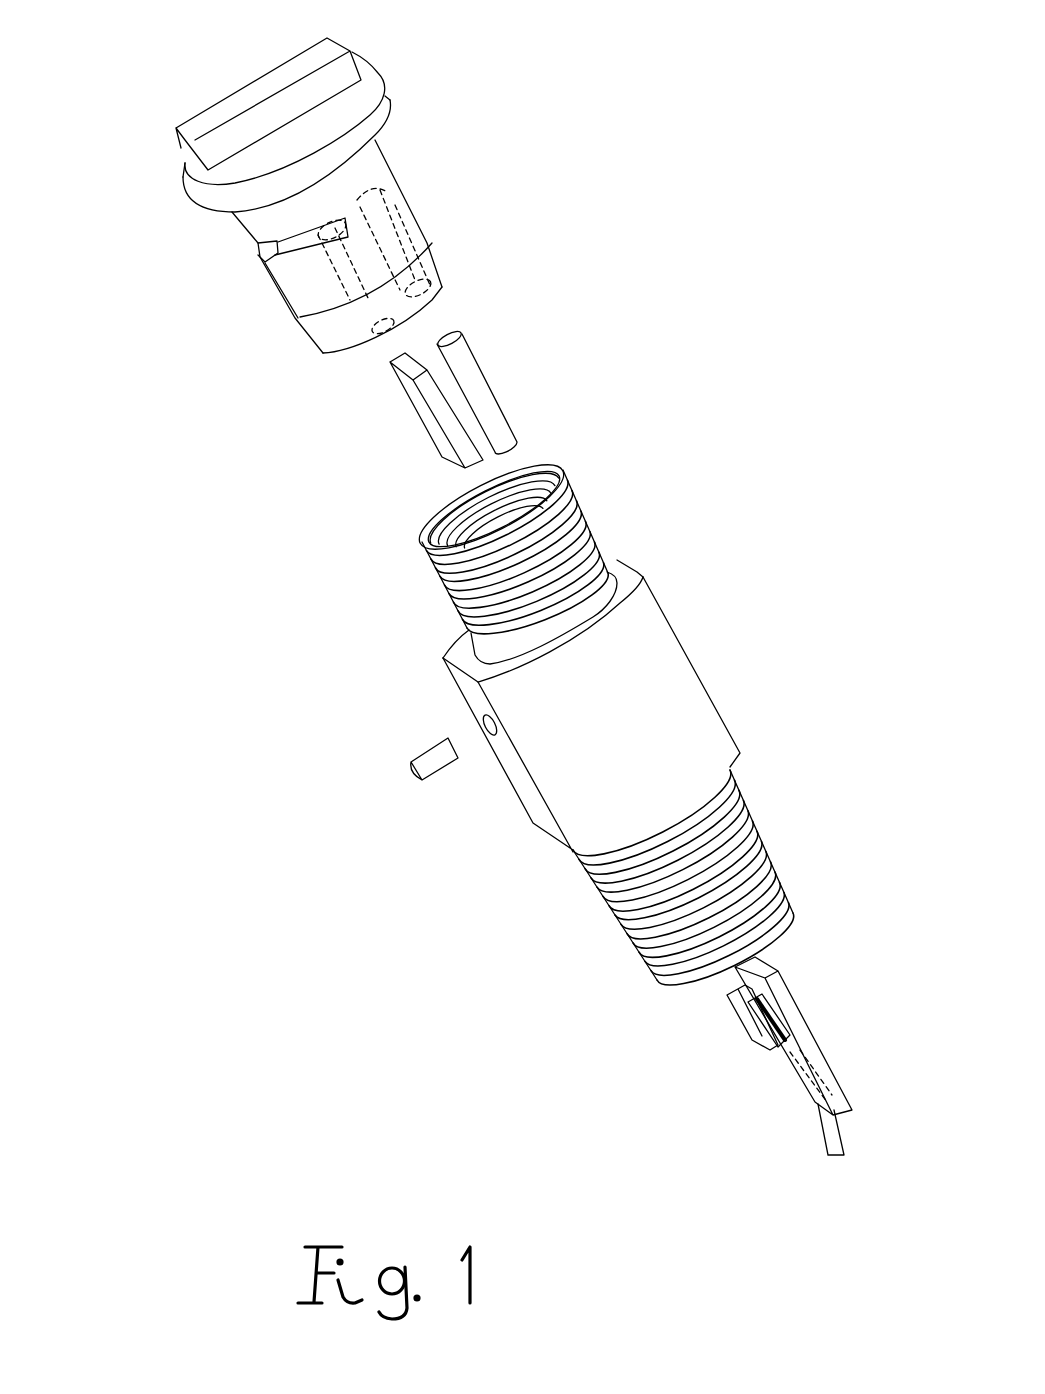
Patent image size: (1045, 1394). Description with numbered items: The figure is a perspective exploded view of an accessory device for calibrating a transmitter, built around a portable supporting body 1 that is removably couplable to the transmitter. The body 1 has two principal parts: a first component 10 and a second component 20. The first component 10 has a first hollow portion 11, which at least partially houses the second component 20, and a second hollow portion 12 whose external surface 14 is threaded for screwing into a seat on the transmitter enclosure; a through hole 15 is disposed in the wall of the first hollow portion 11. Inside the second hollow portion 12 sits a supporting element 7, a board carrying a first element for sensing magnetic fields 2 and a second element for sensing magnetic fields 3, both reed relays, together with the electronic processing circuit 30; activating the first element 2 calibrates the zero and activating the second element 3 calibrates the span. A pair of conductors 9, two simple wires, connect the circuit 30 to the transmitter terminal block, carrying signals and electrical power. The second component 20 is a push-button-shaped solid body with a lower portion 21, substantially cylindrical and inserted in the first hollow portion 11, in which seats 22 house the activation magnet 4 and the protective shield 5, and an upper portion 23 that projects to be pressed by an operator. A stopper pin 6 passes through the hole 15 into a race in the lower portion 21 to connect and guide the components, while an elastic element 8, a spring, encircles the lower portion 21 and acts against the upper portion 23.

The portable supporting body 1 is at (222, 702).
The first element for sensing magnetic fields 2 is at (778, 1047).
The second element for sensing magnetic fields 3 is at (738, 1007).
The activation magnet 4 is at (493, 417).
The protective shield 5 is at (443, 434).
The stopper pin 6 is at (432, 755).
The supporting element 7 is at (812, 1040).
The elastic element 8 is at (433, 578).
The conductors 9 is at (817, 1145).
The first component 10 is at (706, 655).
The first hollow portion 11 is at (601, 585).
The second hollow portion 12 is at (785, 930).
The external surface 14 is at (733, 833).
The through hole 15 is at (490, 730).
The second component 20 is at (418, 180).
The lower portion 21 is at (428, 243).
The seat 22 is at (428, 289).
The upper portion 23 is at (337, 72).
The electronic processing circuit 30 is at (810, 1078).